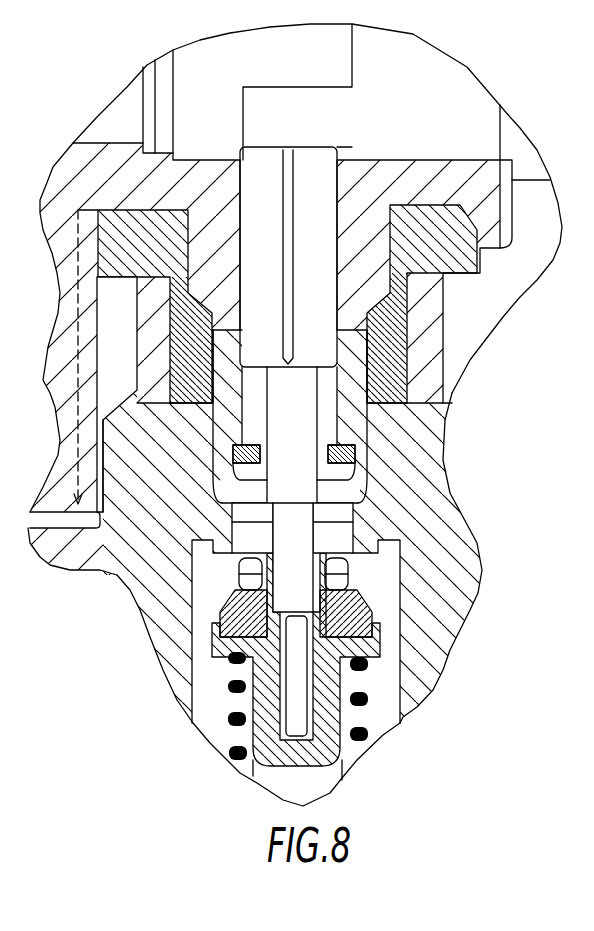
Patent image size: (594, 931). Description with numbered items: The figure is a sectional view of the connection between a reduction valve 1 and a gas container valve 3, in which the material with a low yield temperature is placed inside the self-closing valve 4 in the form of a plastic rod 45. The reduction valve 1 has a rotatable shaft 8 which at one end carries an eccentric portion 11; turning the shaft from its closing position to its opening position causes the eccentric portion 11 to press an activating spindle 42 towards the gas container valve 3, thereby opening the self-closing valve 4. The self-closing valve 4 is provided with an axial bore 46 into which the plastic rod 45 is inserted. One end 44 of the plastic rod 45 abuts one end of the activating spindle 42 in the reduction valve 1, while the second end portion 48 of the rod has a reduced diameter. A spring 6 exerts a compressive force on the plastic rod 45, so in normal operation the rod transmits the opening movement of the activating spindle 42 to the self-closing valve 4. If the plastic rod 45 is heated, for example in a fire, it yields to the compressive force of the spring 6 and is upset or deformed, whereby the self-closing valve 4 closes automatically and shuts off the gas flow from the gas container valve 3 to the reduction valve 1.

The reduction valve 1 is at (77, 143).
The eccentric portion 11 is at (295, 118).
The rotatable shaft 8 is at (429, 138).
The activating spindle 42 is at (257, 220).
The gas container valve 3 is at (425, 468).
The end of the plastic rod 44 is at (290, 518).
The plastic rod 45 is at (290, 572).
The axial bore 46 is at (280, 670).
The second end portion of the plastic rod 48 is at (300, 698).
The spring 6 is at (355, 703).
The self-closing valve 4 is at (372, 657).